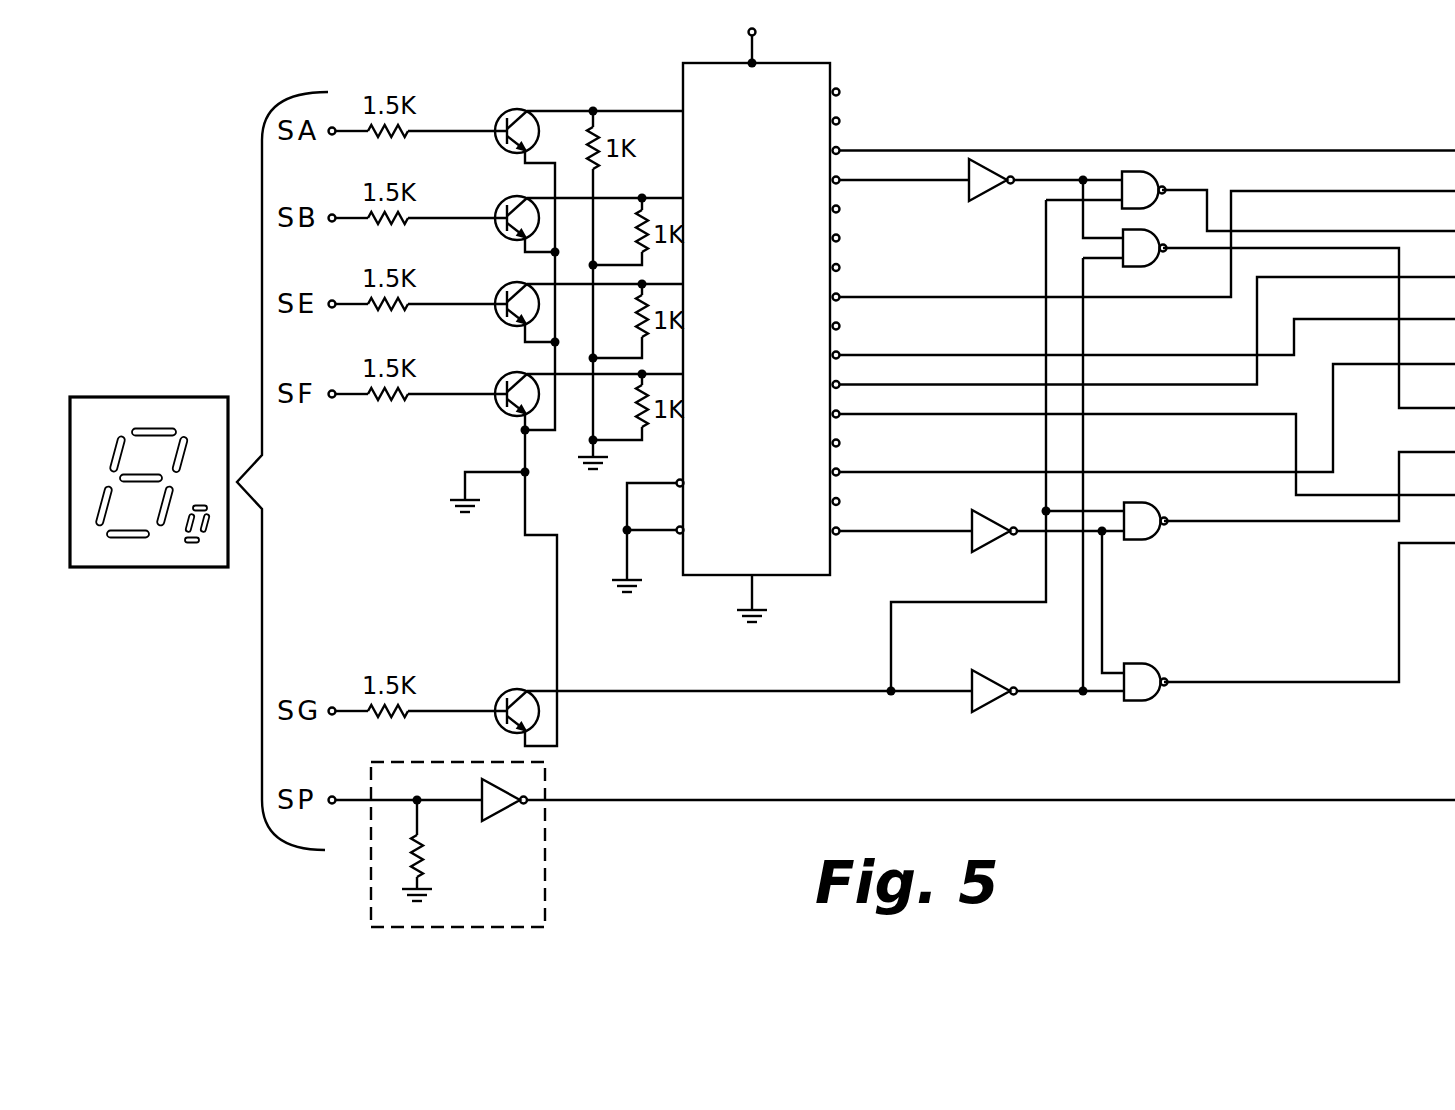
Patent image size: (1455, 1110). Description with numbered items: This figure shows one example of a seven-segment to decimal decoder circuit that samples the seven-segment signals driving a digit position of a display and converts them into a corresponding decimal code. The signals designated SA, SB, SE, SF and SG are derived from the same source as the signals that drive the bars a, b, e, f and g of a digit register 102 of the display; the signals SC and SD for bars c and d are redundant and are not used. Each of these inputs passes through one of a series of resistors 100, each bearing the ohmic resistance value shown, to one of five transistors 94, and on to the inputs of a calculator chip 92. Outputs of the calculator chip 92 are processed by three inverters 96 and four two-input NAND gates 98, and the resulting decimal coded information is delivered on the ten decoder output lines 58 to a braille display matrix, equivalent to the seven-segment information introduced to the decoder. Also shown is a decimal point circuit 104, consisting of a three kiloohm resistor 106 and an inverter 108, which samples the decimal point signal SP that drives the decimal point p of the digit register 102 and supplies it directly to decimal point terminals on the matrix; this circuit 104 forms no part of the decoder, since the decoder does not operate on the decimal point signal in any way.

The decoder output lines 58 is at (1396, 191).
The calculator chip 92 is at (815, 63).
The transistors 94 is at (504, 149).
The inverters 96 is at (992, 192).
The NAND gates 98 is at (1146, 540).
The resistors 100 is at (401, 404).
The digit register 102 is at (142, 568).
The decimal point circuit 104 is at (472, 844).
The 3 kiloohm resistor 106 is at (424, 862).
The inverter 108 is at (487, 790).